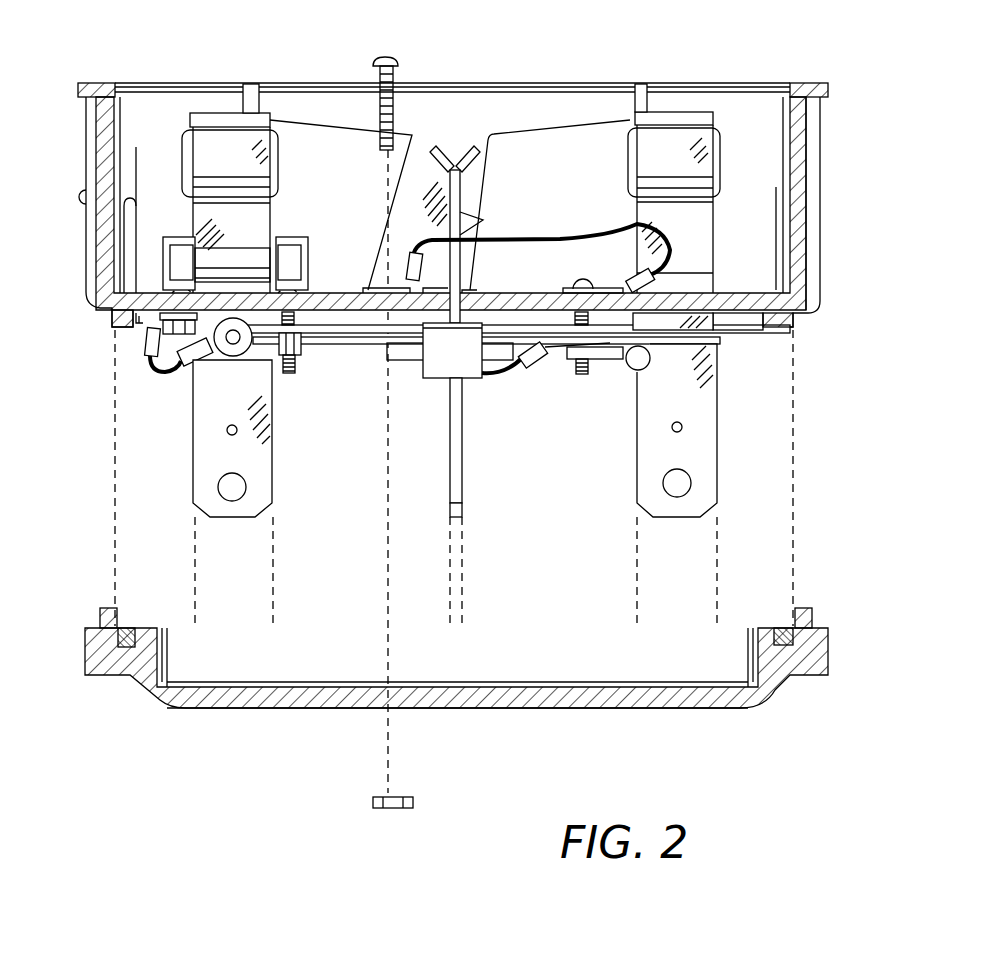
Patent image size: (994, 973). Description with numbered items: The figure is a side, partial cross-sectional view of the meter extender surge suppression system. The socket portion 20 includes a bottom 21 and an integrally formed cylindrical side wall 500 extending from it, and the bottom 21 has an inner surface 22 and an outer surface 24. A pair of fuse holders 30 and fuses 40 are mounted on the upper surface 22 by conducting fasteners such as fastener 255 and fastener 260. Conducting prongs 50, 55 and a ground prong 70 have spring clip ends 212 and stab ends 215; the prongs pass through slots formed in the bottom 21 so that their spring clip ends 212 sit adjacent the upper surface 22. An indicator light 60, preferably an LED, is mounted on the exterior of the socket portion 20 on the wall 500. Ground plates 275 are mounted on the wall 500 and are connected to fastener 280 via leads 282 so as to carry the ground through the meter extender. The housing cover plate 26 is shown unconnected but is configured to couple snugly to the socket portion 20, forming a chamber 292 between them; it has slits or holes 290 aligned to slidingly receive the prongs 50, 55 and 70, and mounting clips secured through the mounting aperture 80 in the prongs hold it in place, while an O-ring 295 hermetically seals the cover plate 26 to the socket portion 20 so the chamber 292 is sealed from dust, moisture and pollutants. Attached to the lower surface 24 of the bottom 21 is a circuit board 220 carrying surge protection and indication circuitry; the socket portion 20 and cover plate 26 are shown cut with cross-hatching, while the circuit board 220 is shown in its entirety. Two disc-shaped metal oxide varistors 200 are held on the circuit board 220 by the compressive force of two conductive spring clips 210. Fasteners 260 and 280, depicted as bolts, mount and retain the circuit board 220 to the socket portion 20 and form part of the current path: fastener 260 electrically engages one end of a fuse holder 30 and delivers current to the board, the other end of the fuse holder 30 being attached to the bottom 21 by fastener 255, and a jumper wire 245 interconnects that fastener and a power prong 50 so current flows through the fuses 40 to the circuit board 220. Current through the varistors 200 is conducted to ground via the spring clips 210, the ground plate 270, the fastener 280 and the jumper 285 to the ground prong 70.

The socket portion 20 is at (95, 83).
The bottom 21 is at (733, 330).
The inner surface 22 is at (757, 290).
The outer surface 24 is at (765, 328).
The housing cover plate 26 is at (327, 710).
The fuse holders 30 is at (310, 250).
The fuses 40 is at (247, 257).
The conducting prongs 50 is at (210, 113).
The conducting prongs 55 is at (674, 112).
The indicator light 60 is at (82, 197).
The ground prong 70 is at (437, 148).
The mounting aperture 80 is at (226, 430).
The metal oxide varistors 200 is at (383, 353).
The conductive spring clips 210 is at (447, 360).
The spring clip ends 212 is at (243, 110).
The stab ends 215 is at (273, 507).
The circuit board 220 is at (670, 353).
The jumper wire 245 is at (153, 357).
The conducting fastener 255 is at (143, 342).
The conductive fastener 260 is at (291, 374).
The ground plate 270 is at (505, 325).
The ground plates 275 is at (524, 128).
The conductive fastener 280 is at (587, 276).
The leads 282 is at (548, 233).
The jumper 285 is at (505, 373).
The slits or holes 290 is at (235, 710).
The chamber 292 is at (553, 665).
The O-ring 295 is at (127, 627).
The cylindrical side wall 500 is at (773, 110).